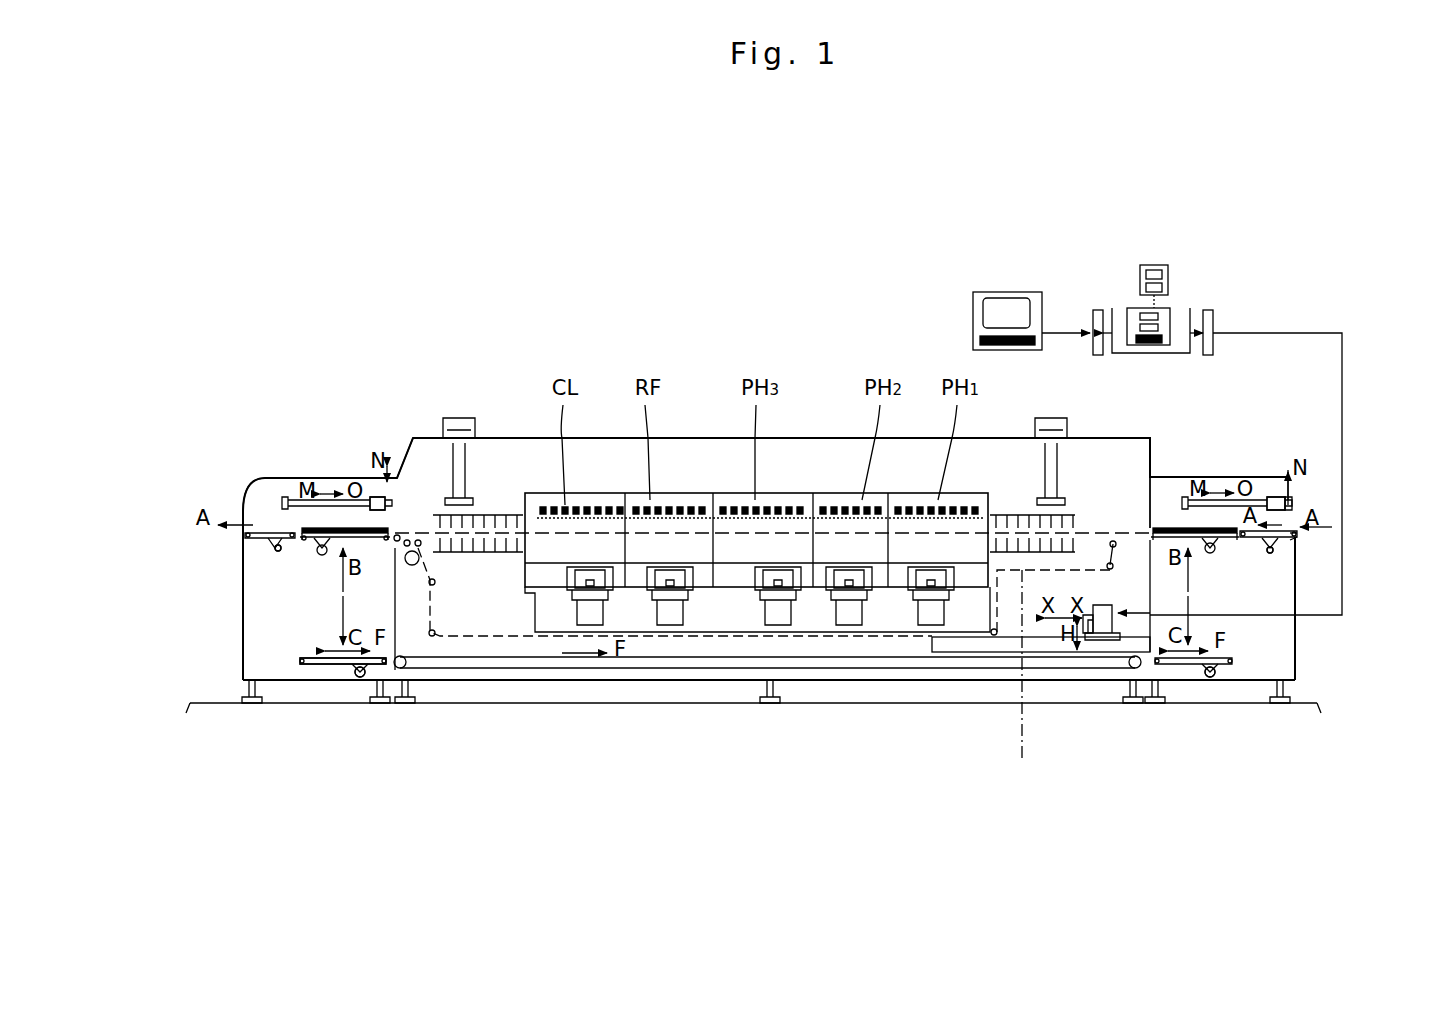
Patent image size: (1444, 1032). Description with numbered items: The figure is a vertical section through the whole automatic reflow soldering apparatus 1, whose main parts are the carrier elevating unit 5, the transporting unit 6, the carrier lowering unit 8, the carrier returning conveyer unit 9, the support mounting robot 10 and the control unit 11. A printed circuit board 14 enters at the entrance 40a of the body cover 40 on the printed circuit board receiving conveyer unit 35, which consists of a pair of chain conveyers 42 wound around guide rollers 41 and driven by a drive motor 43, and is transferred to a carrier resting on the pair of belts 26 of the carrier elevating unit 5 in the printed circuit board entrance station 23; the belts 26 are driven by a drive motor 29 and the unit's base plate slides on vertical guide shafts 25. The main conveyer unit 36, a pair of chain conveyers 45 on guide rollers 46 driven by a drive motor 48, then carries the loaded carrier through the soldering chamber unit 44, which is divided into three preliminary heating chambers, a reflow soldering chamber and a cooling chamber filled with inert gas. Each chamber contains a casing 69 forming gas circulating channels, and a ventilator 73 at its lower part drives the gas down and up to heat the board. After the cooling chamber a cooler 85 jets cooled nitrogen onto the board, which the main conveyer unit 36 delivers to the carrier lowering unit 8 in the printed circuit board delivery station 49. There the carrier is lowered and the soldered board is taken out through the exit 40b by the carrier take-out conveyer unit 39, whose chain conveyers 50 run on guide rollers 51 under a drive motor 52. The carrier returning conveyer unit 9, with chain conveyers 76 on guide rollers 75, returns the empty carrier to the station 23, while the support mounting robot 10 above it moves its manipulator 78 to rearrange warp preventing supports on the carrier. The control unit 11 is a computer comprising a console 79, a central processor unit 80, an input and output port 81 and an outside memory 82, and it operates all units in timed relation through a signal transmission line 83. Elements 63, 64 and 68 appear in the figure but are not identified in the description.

The automatic reflow soldering apparatus 1 is at (860, 305).
The carrier elevating unit 5 is at (1185, 666).
The transporting unit 6 is at (1100, 512).
The carrier lowering unit 8 is at (312, 666).
The carrier returning conveyer unit 9 is at (888, 682).
The support mounting robot 10 is at (1098, 645).
The control unit 11 is at (1147, 255).
The printed circuit board 14 is at (300, 528).
The printed circuit board entrance station 23 is at (1300, 648).
The vertical guide shafts 25 is at (1218, 678).
The belts 26 is at (322, 556).
The drive motor 29 is at (362, 678).
The printed circuit board receiving conveyer unit 35 is at (1272, 554).
The main conveyer unit 36 is at (1127, 522).
The carrier take-out conveyer unit 39 is at (255, 478).
The body cover 40 is at (1290, 497).
The entrance 40a is at (1298, 534).
The exit 40b is at (243, 530).
The guide rollers 41 is at (1300, 546).
The chain conveyers 42 is at (1298, 515).
The drive motor 43 is at (1298, 550).
The soldering chamber unit 44 is at (822, 478).
The chain conveyers 45 is at (1020, 680).
The guide rollers 46 is at (410, 538).
The drive motor 48 is at (413, 567).
The printed circuit board delivery station 49 is at (337, 476).
The chain conveyers 50 is at (262, 522).
The guide rollers 51 is at (272, 548).
The drive motor 52 is at (279, 552).
The outlet width adjusting screw 63 is at (1258, 476).
The adjusting nut 64 is at (374, 496).
The inclined wall 68 is at (401, 470).
The casing 69 is at (700, 500).
The ventilator 73 is at (757, 618).
The guide rollers 75 is at (405, 668).
The chain conveyers 76 is at (945, 654).
The manipulator 78 is at (1045, 640).
The console 79 is at (1005, 292).
The central processor unit 80 is at (1165, 308).
The input and output port 81 is at (1185, 308).
The outside memory 82 is at (1160, 265).
The signal transmission line 83 is at (1343, 330).
The cooler 85 is at (472, 490).